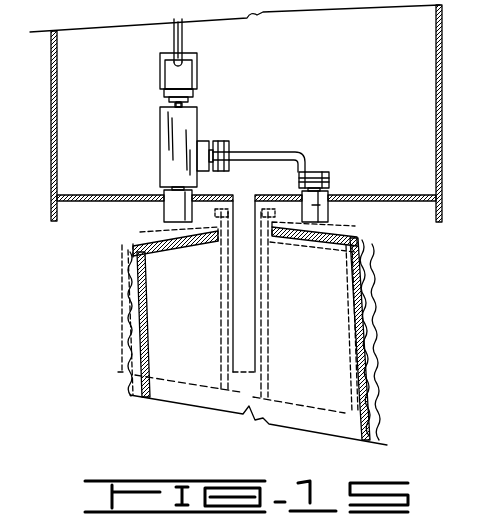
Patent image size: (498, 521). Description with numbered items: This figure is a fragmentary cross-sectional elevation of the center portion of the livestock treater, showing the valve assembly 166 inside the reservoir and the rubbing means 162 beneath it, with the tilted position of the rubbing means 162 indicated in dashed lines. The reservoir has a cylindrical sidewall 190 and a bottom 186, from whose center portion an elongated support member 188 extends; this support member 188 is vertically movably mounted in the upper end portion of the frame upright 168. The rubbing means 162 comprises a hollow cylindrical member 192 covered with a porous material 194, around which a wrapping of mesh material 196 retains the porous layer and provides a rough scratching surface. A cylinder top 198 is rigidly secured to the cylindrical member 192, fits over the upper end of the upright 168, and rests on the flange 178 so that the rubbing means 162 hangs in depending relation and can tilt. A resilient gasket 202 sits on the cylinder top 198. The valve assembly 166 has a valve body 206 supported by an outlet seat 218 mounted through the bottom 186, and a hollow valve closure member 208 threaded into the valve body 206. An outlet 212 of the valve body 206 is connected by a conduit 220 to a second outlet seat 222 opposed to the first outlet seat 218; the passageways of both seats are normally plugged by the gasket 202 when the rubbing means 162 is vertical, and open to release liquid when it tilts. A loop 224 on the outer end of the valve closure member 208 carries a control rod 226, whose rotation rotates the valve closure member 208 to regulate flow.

The rubbing means 162 is at (284, 341).
The valve assembly 166 is at (292, 76).
The frame upright 168 is at (220, 355).
The flange 178 is at (275, 248).
The bottom 186 is at (75, 202).
The support member 188 is at (240, 281).
The cylindrical sidewall 190 is at (51, 70).
The cylindrical member 192 is at (143, 316).
The porous material 194 is at (373, 357).
The mesh material 196 is at (375, 398).
The cylinder top 198 is at (330, 242).
The resilient gasket 202 is at (345, 228).
The valve body 206 is at (162, 153).
The valve closure member 208 is at (176, 105).
The outlet 212 is at (205, 148).
The outlet seat 218 is at (168, 213).
The conduit 220 is at (272, 156).
The outlet seat 222 is at (330, 200).
The loop 224 is at (197, 78).
The control rod 226 is at (183, 43).